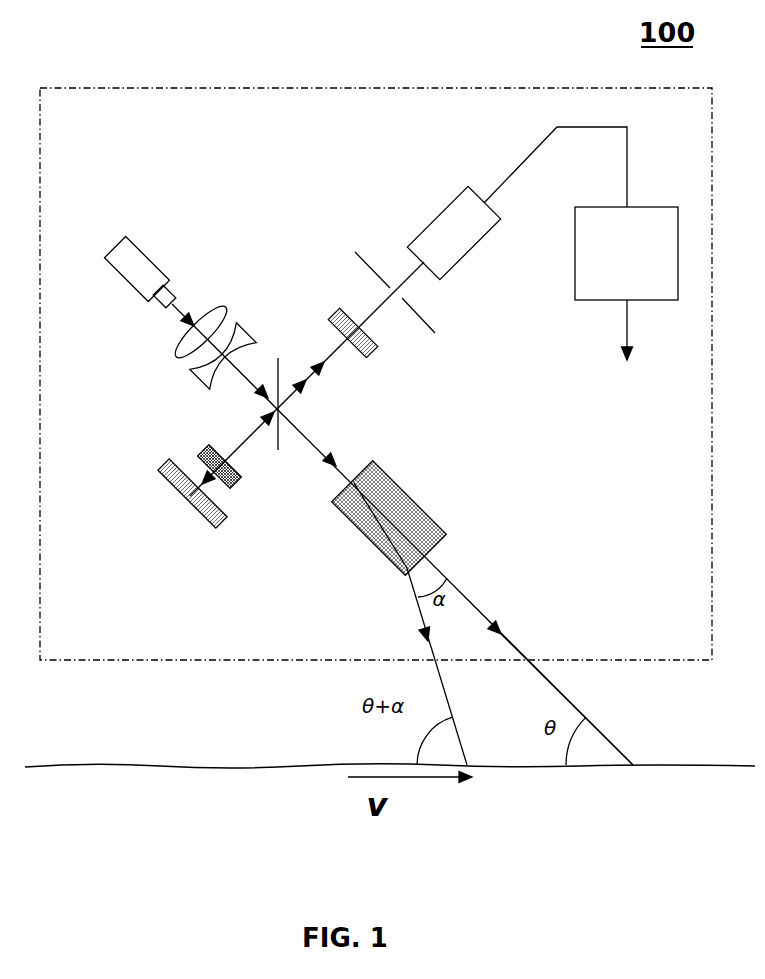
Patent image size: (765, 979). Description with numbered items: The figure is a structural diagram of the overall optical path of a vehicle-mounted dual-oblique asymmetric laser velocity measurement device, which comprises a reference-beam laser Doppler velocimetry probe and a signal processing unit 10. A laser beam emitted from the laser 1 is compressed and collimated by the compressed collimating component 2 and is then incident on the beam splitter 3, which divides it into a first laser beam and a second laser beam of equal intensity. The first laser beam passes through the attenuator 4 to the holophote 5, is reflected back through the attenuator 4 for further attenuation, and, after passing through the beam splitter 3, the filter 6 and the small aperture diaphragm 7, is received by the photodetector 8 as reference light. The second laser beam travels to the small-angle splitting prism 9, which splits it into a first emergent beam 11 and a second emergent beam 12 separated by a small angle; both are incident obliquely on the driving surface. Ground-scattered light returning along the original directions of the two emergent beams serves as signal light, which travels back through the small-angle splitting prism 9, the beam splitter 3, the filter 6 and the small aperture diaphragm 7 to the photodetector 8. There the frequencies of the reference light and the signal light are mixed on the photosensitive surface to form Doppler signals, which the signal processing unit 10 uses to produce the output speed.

The laser 1 is at (106, 247).
The compressed collimating component 2 is at (187, 362).
The beam splitter 3 is at (278, 450).
The attenuator 4 is at (205, 447).
The holophote 5 is at (186, 500).
The filter 6 is at (336, 311).
The small aperture diaphragm 7 is at (355, 252).
The photodetector 8 is at (434, 214).
The small-angle splitting prism 9 is at (413, 495).
The signal processing unit 10 is at (641, 207).
The first emergent beam 11 is at (516, 644).
The second emergent beam 12 is at (418, 622).